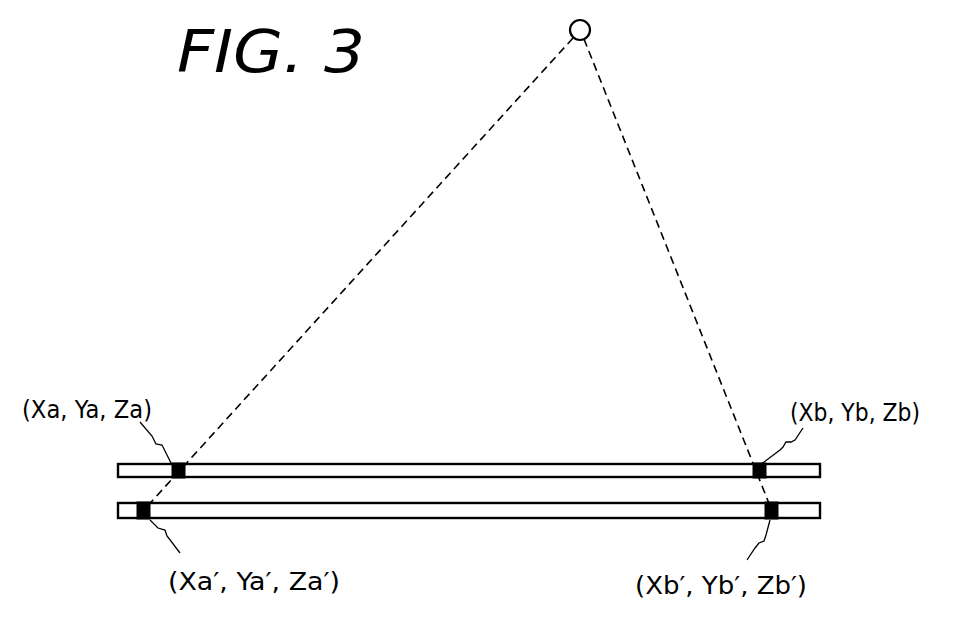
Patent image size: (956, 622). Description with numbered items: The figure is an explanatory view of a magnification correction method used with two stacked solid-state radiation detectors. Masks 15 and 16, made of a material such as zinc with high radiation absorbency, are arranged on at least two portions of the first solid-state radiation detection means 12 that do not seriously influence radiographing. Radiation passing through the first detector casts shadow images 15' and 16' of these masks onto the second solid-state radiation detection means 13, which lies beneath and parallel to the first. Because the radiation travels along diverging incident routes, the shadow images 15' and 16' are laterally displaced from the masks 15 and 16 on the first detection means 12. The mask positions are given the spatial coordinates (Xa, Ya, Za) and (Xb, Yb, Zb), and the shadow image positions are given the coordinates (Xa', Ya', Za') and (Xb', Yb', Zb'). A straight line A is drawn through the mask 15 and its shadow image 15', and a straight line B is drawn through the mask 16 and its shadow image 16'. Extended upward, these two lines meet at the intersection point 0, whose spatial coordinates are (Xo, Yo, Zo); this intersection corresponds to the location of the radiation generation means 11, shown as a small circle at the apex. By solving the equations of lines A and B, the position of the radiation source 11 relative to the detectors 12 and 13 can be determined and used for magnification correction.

The radiation generation means 11 is at (591, 30).
The intersection point O 0 is at (569, 30).
The straight line A is at (411, 215).
The straight line B is at (667, 243).
The first solid-state radiation detection means 12 is at (520, 464).
The second solid-state radiation detection means 13 is at (523, 520).
The mask 15 is at (182, 449).
The shadow image 15' is at (127, 538).
The mask 16 is at (765, 450).
The shadow image 16' is at (793, 534).